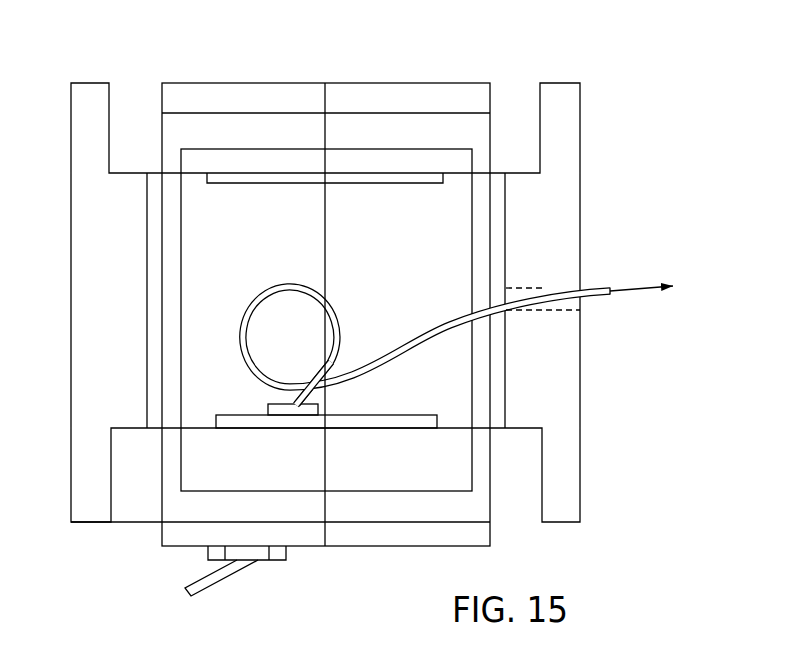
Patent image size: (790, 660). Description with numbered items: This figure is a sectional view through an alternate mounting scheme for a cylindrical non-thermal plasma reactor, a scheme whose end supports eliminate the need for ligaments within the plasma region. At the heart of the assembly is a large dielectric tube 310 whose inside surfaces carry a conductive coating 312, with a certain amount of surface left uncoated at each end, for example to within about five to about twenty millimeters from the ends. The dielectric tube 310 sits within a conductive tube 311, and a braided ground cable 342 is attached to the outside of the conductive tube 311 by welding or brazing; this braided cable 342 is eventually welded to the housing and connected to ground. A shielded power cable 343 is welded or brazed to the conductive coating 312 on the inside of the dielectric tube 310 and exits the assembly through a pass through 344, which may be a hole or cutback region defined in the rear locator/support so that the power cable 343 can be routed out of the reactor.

The dielectric tube 310 is at (437, 55).
The conductive tube 311 is at (193, 100).
The conductive coating 312 is at (257, 178).
The braided ground cable 342 is at (213, 583).
The shielded power cable 343 is at (437, 335).
The pass through 344 is at (563, 298).